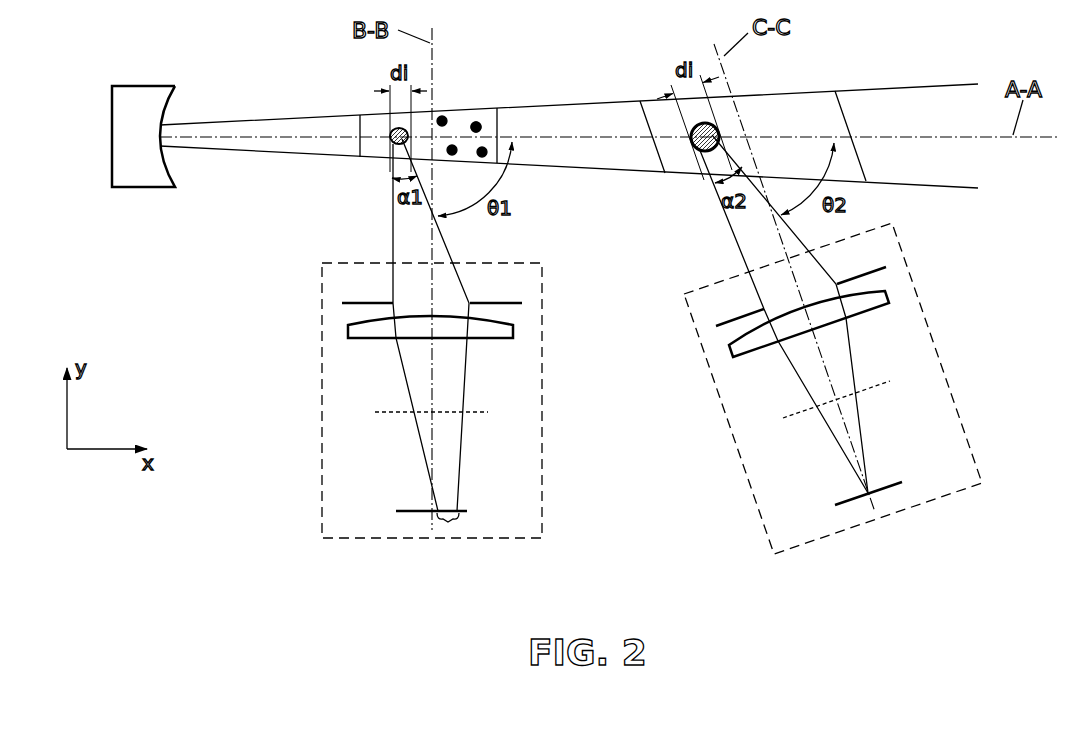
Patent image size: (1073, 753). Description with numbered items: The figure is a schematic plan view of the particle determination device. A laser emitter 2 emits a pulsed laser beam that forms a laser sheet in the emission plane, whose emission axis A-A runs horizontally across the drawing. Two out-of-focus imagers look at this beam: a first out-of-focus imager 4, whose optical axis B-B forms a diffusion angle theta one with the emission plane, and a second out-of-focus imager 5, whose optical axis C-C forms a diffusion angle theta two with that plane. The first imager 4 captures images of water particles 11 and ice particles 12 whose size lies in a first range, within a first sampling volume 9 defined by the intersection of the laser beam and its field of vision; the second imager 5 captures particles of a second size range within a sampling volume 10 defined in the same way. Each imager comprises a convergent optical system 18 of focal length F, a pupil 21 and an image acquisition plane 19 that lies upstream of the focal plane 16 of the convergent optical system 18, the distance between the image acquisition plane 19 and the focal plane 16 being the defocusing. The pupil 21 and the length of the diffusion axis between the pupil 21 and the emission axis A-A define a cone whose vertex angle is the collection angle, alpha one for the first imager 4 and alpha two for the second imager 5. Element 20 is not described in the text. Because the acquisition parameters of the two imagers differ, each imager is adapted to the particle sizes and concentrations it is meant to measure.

The laser emitter 2 is at (135, 92).
The first out-of-focus imager 4 is at (320, 468).
The second out-of-focus imager 5 is at (727, 435).
The first sampling volume 9 is at (463, 110).
The sampling volume 10 is at (806, 102).
The water particles 11 is at (393, 129).
The ice particles 12 is at (477, 124).
The focal plane 16 is at (406, 514).
The convergent optical system 18 is at (516, 327).
The image acquisition plane 19 is at (380, 410).
The detector pixels 20 is at (457, 524).
The pupil 21 is at (351, 300).